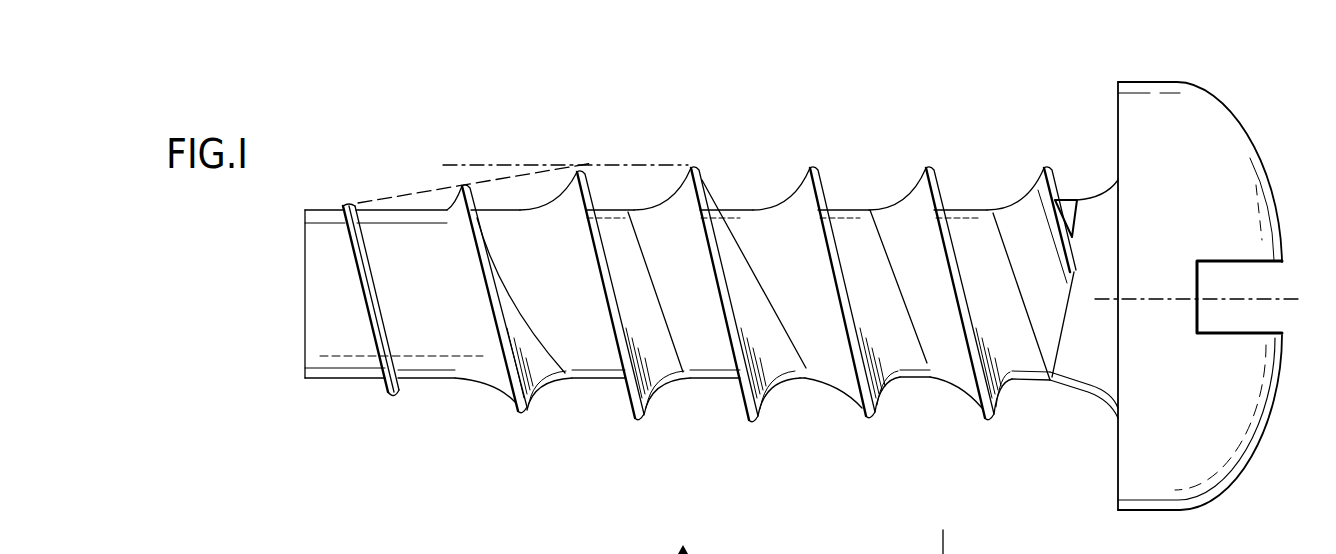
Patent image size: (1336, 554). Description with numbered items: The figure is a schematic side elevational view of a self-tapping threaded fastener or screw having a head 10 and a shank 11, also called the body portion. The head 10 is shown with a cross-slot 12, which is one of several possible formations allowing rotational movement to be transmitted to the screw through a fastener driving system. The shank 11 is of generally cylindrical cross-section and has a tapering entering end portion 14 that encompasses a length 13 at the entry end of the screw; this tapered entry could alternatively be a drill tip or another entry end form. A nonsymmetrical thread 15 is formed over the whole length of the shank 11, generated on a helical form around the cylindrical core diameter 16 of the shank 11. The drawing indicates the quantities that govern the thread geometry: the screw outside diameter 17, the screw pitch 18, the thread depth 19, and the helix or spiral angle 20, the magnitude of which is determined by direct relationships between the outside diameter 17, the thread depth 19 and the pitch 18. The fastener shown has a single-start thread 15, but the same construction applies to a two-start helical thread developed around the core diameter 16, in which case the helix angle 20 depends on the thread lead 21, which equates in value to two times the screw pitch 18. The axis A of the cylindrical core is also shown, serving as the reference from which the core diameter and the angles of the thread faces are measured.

The head 10 is at (1255, 462).
The shank 11 is at (700, 396).
The cross-slot 12 is at (1276, 314).
The length 13 is at (305, 83).
The tapering entering end portion 14 is at (424, 174).
The thread 15 is at (732, 419).
The core diameter 16 is at (300, 380).
The screw outside diameter 17 is at (927, 423).
The screw pitch 18 is at (813, 162).
The thread depth 19 is at (618, 210).
The helix angle 20 is at (932, 157).
The thread lead 21 is at (933, 160).
The axis A is at (1262, 299).